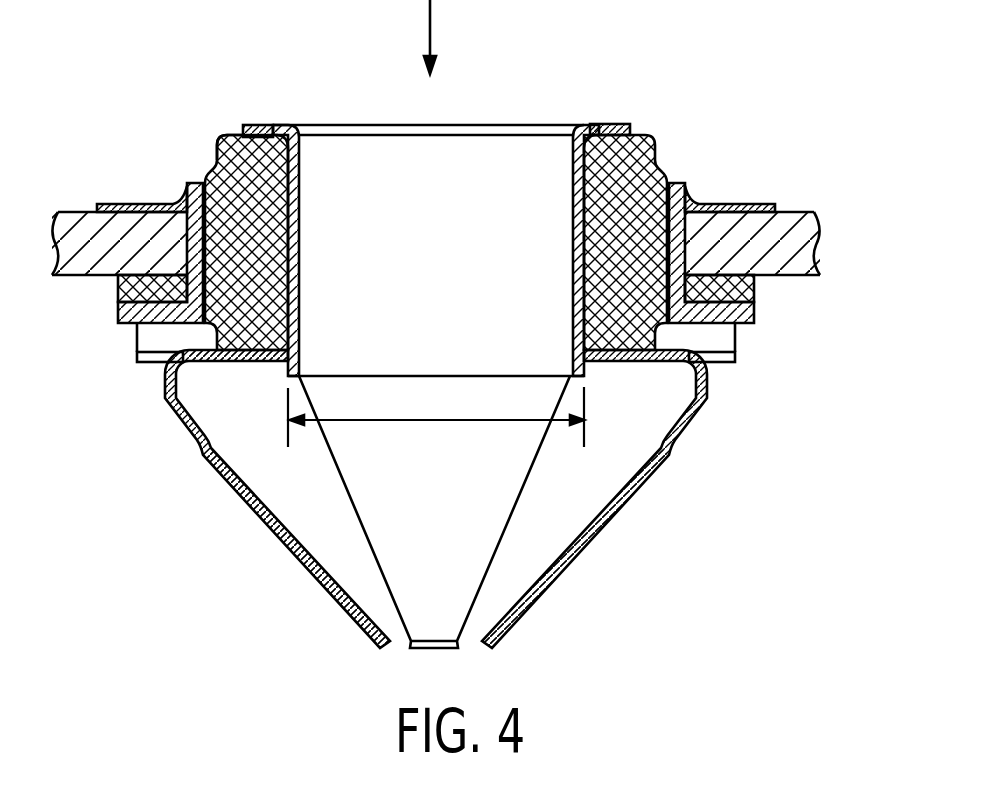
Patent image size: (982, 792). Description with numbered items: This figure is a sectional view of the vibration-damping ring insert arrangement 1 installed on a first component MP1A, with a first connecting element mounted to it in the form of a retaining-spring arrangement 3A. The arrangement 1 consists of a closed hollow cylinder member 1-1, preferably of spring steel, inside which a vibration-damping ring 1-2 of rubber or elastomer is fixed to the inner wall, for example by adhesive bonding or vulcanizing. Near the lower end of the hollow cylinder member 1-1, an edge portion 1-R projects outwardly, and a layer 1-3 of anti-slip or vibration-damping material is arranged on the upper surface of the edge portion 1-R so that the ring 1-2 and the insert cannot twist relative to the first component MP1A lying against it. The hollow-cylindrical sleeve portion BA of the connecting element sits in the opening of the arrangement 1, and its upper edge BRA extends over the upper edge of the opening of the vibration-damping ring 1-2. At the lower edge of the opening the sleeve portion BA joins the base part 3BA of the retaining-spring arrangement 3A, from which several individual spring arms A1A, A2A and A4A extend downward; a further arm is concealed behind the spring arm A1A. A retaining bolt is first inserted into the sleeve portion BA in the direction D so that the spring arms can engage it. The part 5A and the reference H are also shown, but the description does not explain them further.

The insertion direction D is at (442, 37).
The vibration-damping ring insert arrangement 1 is at (212, 168).
The hollow cylinder member 1-1 is at (187, 188).
The vibration-damping ring 1-2 is at (227, 135).
The layer 1-3 is at (118, 293).
The edge portion 1-R is at (137, 325).
The upper edge of sleeve BRA is at (260, 125).
The sleeve portion BA is at (293, 197).
The first component MP1A is at (793, 222).
The retaining plate 5A is at (737, 400).
The retaining-spring arrangement 3A is at (617, 512).
The base part 3BA is at (232, 363).
The spring arm A2A is at (241, 497).
The spring arm A4A is at (530, 597).
The spring arm A1A is at (363, 523).
The height dimension H is at (420, 428).